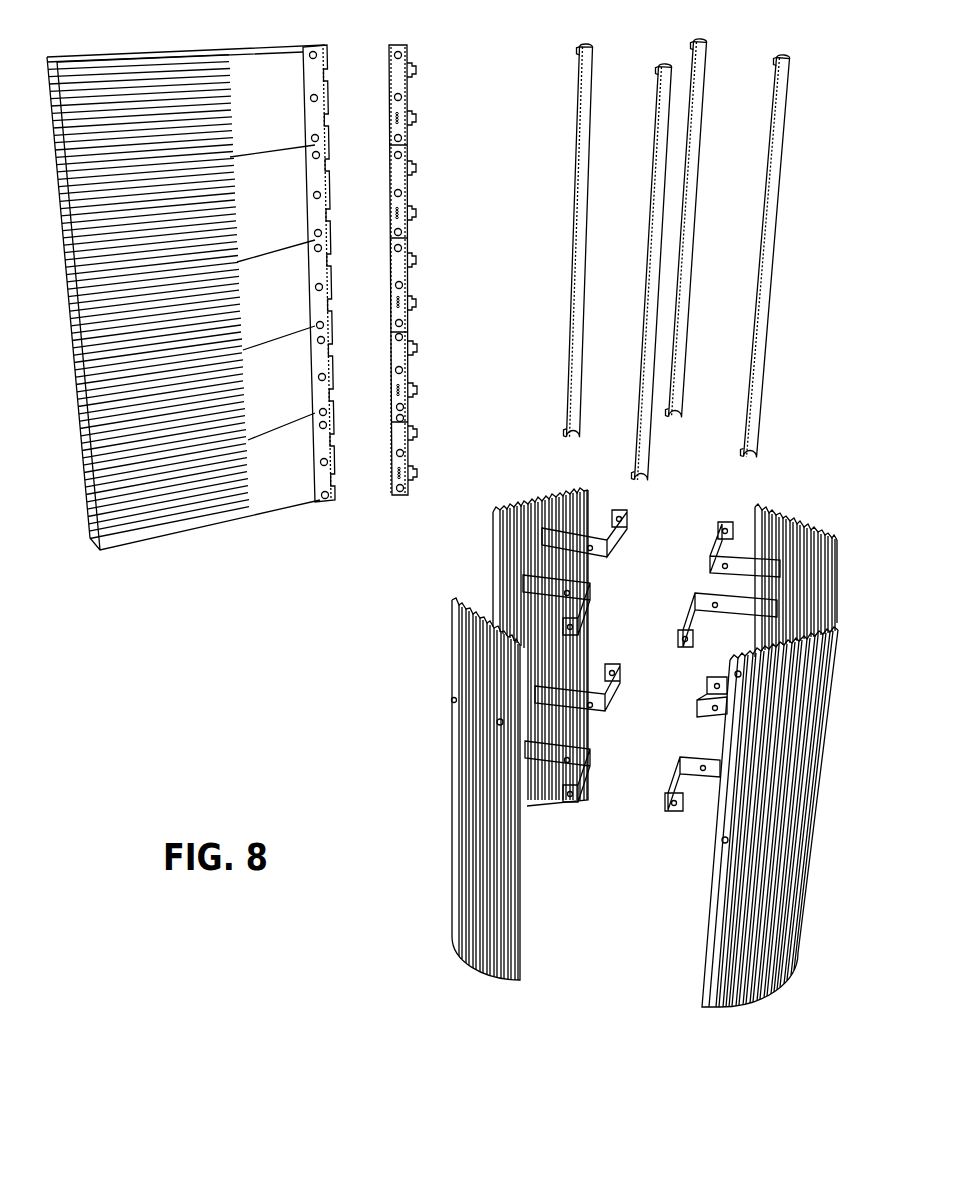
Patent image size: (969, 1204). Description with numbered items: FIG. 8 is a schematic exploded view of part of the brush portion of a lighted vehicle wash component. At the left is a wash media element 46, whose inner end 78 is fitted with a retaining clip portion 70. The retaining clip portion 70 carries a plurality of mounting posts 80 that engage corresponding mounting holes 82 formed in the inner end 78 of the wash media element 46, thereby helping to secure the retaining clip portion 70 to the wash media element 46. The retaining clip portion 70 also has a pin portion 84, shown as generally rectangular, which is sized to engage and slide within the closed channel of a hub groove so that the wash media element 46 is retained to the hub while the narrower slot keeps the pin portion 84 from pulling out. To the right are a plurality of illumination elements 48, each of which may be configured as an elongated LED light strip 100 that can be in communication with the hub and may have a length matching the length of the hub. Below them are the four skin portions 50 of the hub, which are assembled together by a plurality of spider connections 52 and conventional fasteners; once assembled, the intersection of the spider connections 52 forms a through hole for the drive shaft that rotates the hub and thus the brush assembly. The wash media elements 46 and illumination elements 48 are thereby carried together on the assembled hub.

The wash media element 46 is at (158, 520).
The illumination element 48 is at (645, 264).
The skin portion 50 is at (537, 495).
The spider connection 52 is at (693, 622).
The retaining clip portion 70 is at (392, 483).
The inner end 78 is at (318, 497).
The mounting post 80 is at (402, 193).
The mounting hole 82 is at (322, 287).
The pin portion 84 is at (417, 118).
The LED light strip 100 is at (656, 113).